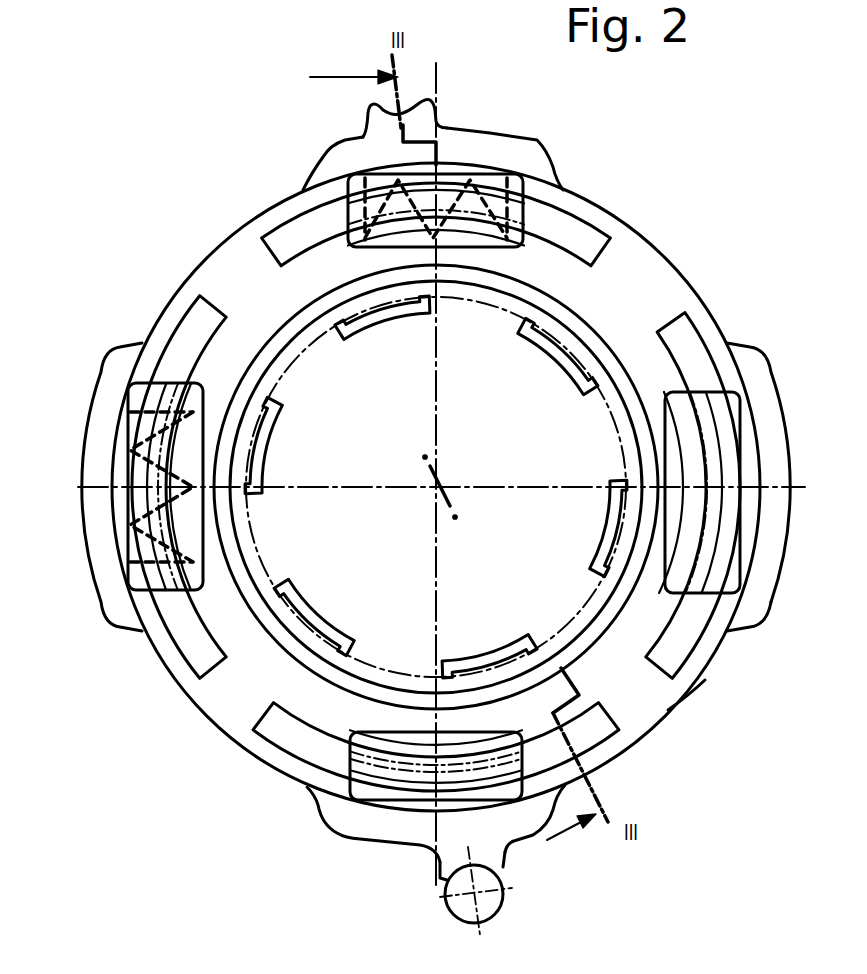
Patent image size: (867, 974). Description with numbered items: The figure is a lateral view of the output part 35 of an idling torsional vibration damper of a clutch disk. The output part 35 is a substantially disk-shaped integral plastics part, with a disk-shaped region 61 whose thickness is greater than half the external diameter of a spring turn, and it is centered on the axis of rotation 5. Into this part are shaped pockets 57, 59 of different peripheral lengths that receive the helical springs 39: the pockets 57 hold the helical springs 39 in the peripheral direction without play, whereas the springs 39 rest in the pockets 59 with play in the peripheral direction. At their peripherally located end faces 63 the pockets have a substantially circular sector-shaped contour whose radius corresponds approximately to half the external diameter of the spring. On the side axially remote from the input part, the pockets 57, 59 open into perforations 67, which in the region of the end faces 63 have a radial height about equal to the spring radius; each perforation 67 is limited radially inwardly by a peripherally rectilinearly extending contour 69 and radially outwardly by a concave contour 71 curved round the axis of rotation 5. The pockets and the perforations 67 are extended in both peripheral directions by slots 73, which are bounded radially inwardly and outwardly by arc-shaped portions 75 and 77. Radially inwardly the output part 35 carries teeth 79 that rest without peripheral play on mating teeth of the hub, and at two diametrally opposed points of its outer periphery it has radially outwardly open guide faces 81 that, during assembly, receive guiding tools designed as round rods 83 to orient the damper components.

The axis of rotation 5 is at (452, 465).
The output part 35 is at (624, 186).
The helical springs 39 is at (362, 188).
The pockets 57 is at (496, 172).
The pockets 59 is at (752, 466).
The disk-shaped region 61 is at (658, 290).
The end faces 63 is at (740, 392).
The perforations 67 is at (715, 445).
The peripherally rectilinearly extending contour 69 is at (690, 538).
The concave contour 71 is at (734, 514).
The slots 73 is at (684, 342).
The arc-shaped portion 75 is at (670, 700).
The arc-shaped portion 77 is at (708, 616).
The teeth 79 is at (524, 336).
The guide faces 81 is at (410, 112).
The round rods 83 is at (490, 903).